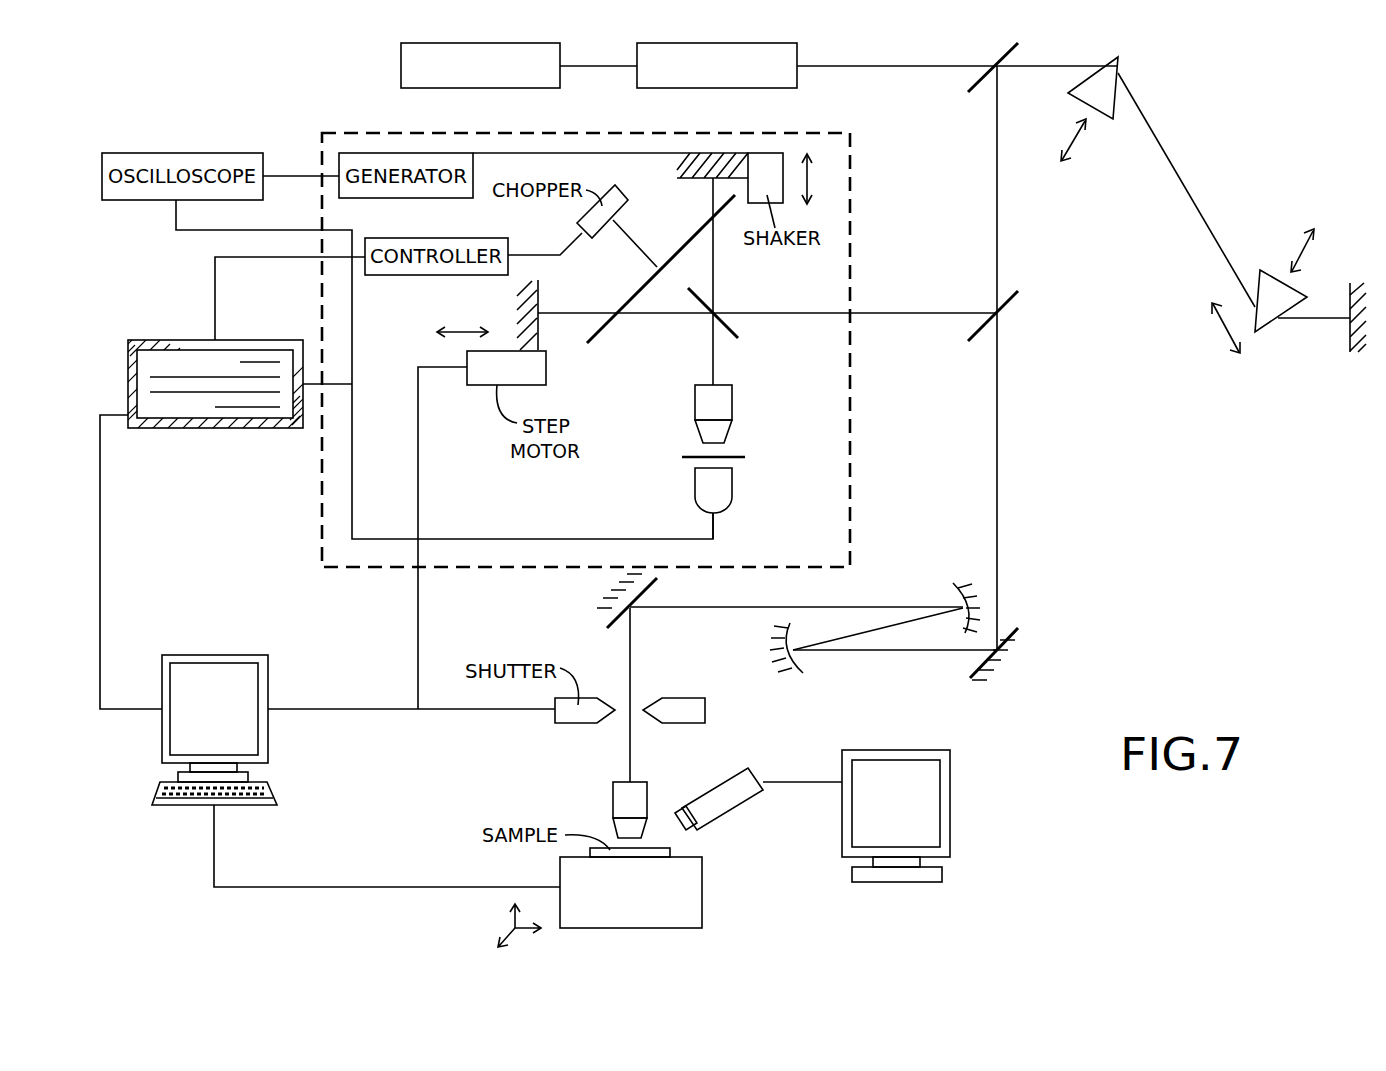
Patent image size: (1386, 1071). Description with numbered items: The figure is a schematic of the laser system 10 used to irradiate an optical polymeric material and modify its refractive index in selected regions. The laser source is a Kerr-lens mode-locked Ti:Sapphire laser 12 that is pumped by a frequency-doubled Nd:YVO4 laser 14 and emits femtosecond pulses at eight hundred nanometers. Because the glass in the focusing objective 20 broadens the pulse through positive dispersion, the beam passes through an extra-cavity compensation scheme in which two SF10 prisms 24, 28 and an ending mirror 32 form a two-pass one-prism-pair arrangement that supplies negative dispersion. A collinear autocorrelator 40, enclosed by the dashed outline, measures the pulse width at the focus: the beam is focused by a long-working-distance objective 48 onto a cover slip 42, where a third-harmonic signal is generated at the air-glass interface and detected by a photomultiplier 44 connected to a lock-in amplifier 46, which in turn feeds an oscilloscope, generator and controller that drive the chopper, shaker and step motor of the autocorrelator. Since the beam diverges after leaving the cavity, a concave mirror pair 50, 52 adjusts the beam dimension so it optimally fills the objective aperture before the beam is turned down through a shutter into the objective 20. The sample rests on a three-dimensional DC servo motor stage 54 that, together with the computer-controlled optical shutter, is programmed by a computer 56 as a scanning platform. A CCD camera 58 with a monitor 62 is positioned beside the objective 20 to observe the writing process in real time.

The laser system 10 is at (1118, 508).
The Kerr-lens mode-locked Ti:Sapphire laser 12 is at (401, 63).
The frequency-doubled Nd:YVO4 laser 14 is at (798, 52).
The objective 20 is at (613, 803).
The SF10 prism 24 is at (1100, 116).
The SF10 prism 28 is at (1272, 275).
The ending mirror 32 is at (1350, 338).
The collinear autocorrelator 40 is at (853, 215).
The cover slip 42 is at (735, 455).
The photomultiplier 44 is at (700, 492).
The lock-in amplifier 46 is at (172, 430).
The long-working-distance objective 48 is at (695, 406).
The concave mirror 50 is at (800, 668).
The concave mirror 52 is at (955, 593).
The DC servo motor stage 54 is at (697, 900).
The computer 56 is at (211, 660).
The CCD camera 58 is at (737, 810).
The monitor 62 is at (950, 808).